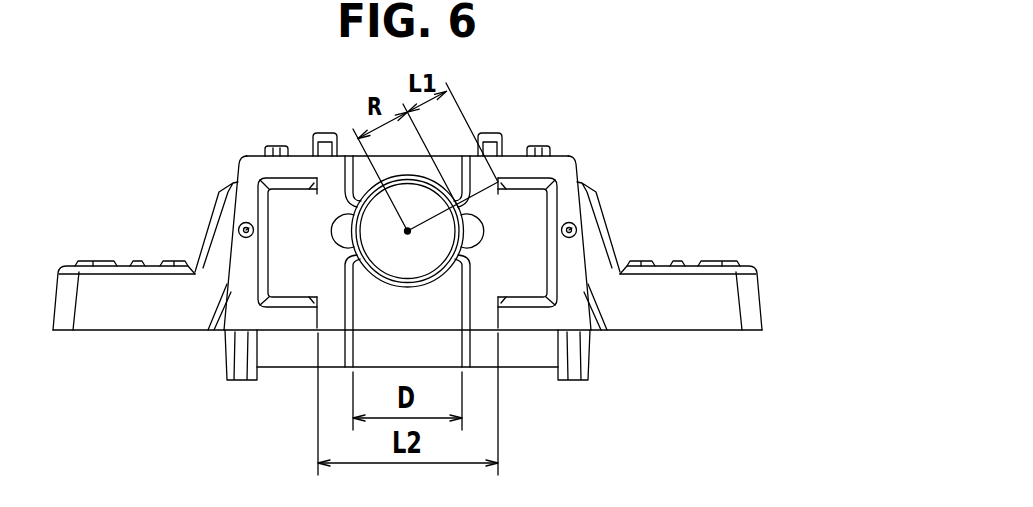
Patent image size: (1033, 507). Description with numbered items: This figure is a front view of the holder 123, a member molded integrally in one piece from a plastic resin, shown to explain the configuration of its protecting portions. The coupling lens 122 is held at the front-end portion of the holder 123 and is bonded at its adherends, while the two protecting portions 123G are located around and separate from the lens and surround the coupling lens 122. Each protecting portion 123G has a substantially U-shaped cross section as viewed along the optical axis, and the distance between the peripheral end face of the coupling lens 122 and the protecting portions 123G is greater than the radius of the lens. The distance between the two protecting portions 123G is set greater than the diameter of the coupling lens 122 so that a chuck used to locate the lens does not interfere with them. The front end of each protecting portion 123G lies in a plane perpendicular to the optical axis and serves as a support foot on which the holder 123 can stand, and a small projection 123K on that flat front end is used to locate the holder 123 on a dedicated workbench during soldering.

The holder 123 is at (582, 80).
The protecting portion 123G is at (247, 163).
The small projection 123K is at (239, 228).
The coupling lens 122 is at (377, 220).